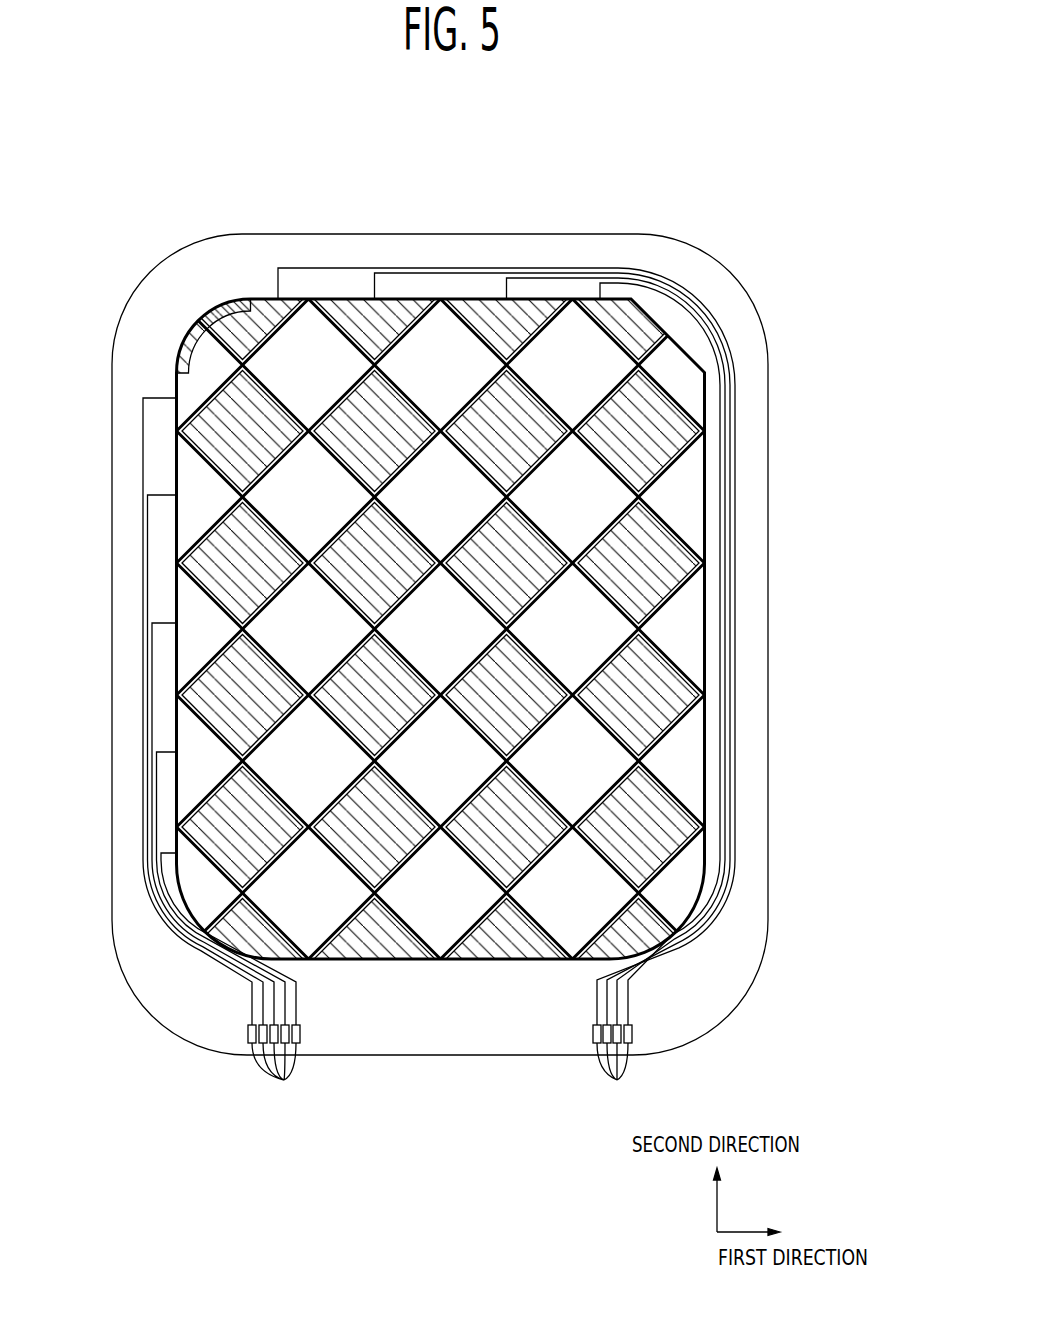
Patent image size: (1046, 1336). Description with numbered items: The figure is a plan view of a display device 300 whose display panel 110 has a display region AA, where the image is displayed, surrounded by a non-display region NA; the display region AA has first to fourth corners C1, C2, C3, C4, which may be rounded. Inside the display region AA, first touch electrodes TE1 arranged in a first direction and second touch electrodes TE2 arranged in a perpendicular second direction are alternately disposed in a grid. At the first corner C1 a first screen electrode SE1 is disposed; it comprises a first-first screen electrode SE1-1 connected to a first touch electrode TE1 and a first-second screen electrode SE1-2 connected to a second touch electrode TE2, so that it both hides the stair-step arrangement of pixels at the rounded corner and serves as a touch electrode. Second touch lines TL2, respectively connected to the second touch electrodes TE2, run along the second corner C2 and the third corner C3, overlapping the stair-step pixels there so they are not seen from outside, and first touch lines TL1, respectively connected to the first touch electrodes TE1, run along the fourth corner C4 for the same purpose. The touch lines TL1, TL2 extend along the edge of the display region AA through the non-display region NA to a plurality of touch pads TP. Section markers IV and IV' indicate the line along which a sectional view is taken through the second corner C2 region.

The display device 300 is at (784, 98).
The display panel 110 is at (768, 636).
The display region AA is at (704, 348).
The non-display region NA is at (758, 492).
The first touch electrodes TE1 is at (300, 393).
The second touch electrodes TE2 is at (388, 593).
The first screen electrode SE1 is at (190, 274).
The (1-1)th screen electrode SE1-1 is at (185, 328).
The (1-2)th screen electrode SE1-2 is at (232, 300).
The first touch lines TL1 is at (143, 738).
The second touch lines TL2 is at (735, 735).
The touch pads TP is at (440, 1069).
The first corner C1 is at (166, 338).
The second corner C2 is at (704, 325).
The third corner C3 is at (705, 935).
The fourth corner C4 is at (178, 934).
The section line IV is at (679, 281).
The section line IV' is at (628, 323).